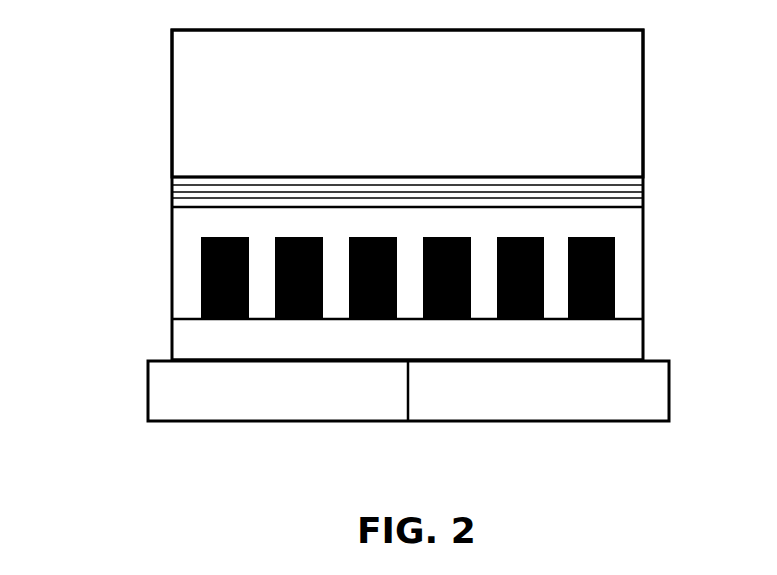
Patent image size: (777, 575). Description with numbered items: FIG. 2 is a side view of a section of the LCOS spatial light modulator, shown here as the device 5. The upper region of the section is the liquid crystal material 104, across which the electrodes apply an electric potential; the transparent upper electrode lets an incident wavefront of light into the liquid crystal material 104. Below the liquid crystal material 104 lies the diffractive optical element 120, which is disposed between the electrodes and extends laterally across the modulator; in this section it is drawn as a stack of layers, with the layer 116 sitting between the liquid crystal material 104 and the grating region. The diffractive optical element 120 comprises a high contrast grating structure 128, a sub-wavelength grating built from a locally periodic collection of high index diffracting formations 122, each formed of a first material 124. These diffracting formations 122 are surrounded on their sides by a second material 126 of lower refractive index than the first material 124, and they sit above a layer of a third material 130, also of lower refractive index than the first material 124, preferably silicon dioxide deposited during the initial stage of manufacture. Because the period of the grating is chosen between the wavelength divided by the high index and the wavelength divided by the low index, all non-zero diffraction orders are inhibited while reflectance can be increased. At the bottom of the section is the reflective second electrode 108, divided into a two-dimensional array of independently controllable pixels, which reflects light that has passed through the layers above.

The semiconductor device 5 is at (172, 102).
The liquid crystal material 104 is at (636, 96).
The second electrode 108 is at (658, 400).
The multilayer stack 116 is at (645, 186).
The diffractive optical element 120 is at (645, 223).
The diffracting formations 122 is at (615, 257).
The first material 124 is at (201, 238).
The second material 126 is at (188, 296).
The high contrast grating structure 128 is at (148, 297).
The third material 130 is at (643, 341).